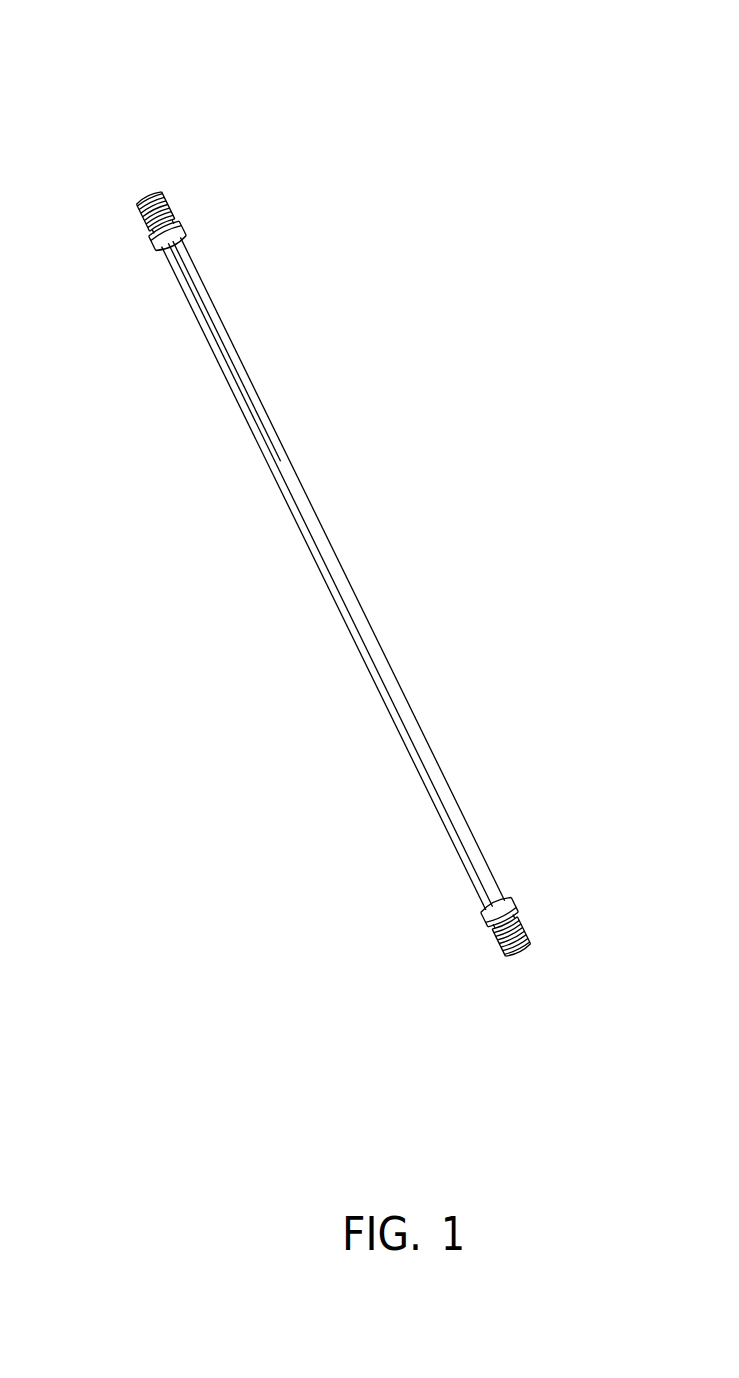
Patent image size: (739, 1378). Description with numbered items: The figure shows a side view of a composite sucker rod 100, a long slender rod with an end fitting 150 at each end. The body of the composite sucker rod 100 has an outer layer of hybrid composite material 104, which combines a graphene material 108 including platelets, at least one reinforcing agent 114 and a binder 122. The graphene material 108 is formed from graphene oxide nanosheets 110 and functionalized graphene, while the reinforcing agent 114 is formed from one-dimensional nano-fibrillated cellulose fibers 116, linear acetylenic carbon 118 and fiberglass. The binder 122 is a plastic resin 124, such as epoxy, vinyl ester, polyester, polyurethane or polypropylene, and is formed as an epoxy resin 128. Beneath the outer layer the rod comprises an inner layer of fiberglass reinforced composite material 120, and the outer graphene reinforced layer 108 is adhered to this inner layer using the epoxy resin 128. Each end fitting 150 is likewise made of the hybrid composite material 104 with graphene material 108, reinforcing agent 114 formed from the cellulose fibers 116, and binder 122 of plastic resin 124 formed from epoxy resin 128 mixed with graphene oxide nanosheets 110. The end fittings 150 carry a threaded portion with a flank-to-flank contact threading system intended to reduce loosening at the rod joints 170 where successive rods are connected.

The composite sucker rod 100 is at (563, 112).
The hybrid composite material 104 is at (208, 288).
The graphene material 108 is at (176, 283).
The graphene oxide nanosheets 110 is at (200, 336).
The reinforcing agent 114 is at (226, 390).
The one-dimensional nano-fibrillated cellulose fibers 116 is at (268, 471).
The linear acetylenic carbon 118 is at (296, 528).
The inner layer of fiberglass reinforced composite material 120 is at (235, 342).
The binder 122 is at (257, 388).
The plastic resin 124 is at (279, 434).
The epoxy resin 128 is at (307, 490).
The end fitting 150 is at (172, 212).
The rod joints 170 is at (141, 227).